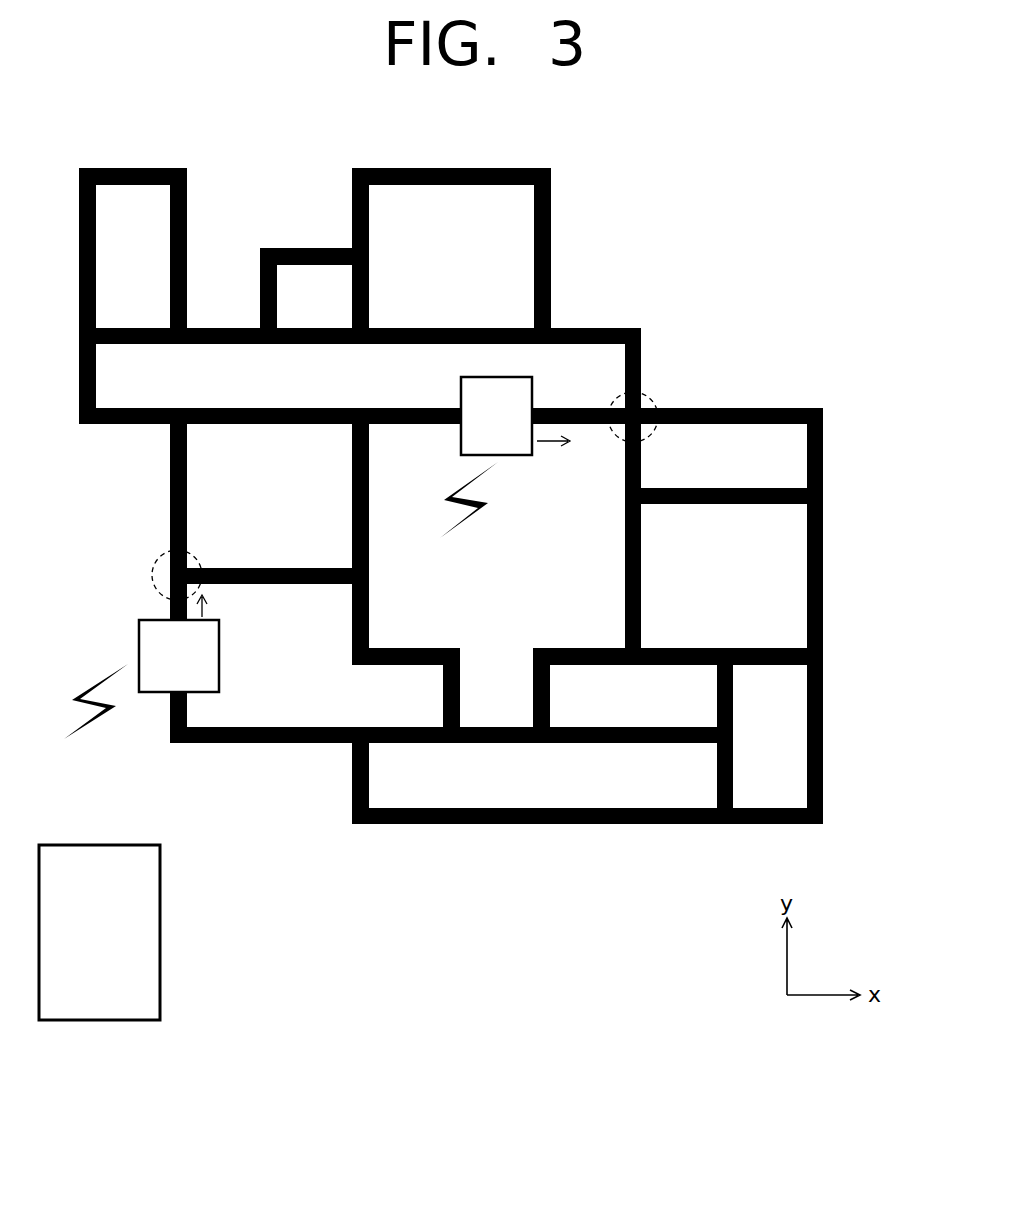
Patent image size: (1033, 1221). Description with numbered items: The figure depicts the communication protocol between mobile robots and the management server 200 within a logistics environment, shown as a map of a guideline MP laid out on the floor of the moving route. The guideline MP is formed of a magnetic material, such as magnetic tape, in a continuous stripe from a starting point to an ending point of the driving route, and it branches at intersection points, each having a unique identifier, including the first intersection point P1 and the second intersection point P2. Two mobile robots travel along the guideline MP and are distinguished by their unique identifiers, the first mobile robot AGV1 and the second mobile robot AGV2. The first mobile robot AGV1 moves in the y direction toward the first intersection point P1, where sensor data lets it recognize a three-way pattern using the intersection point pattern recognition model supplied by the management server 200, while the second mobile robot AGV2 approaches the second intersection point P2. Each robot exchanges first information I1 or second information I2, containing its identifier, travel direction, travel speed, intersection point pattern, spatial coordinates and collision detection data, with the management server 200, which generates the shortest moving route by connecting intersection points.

The guideline MP is at (824, 576).
The first mobile robot AGV1 is at (179, 643).
The second mobile robot AGV2 is at (515, 416).
The first intersection point P1 is at (152, 574).
The second intersection point P2 is at (650, 400).
The first information I1 is at (79, 714).
The second information I2 is at (451, 514).
The management server 200 is at (162, 916).